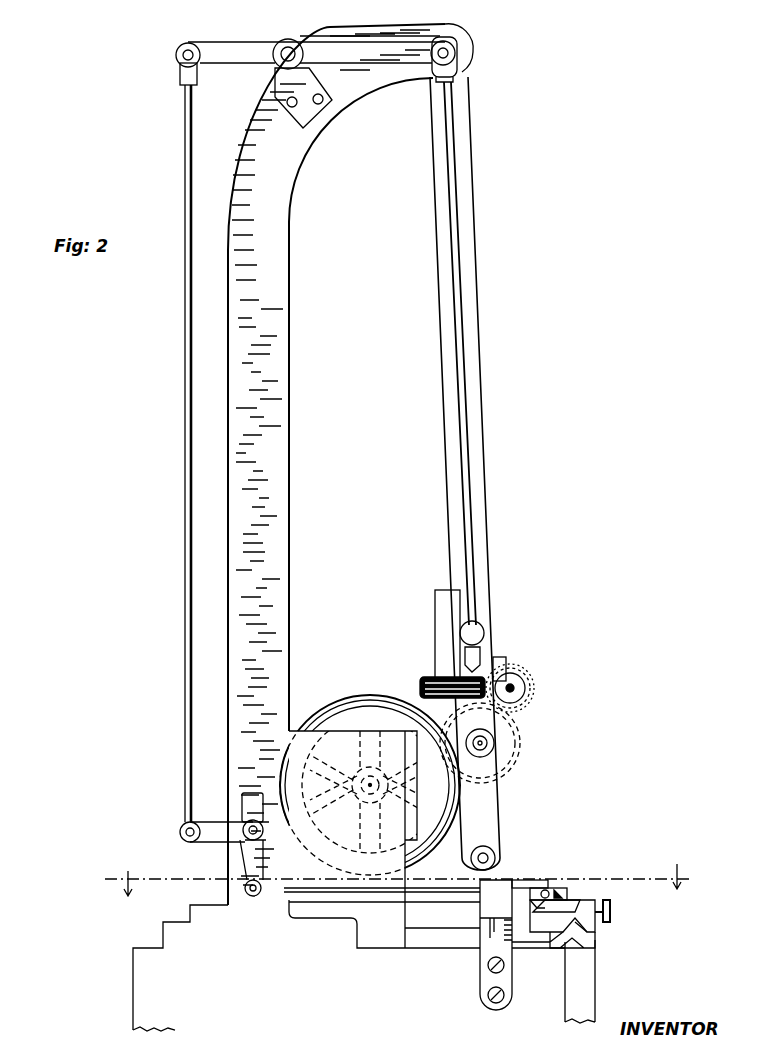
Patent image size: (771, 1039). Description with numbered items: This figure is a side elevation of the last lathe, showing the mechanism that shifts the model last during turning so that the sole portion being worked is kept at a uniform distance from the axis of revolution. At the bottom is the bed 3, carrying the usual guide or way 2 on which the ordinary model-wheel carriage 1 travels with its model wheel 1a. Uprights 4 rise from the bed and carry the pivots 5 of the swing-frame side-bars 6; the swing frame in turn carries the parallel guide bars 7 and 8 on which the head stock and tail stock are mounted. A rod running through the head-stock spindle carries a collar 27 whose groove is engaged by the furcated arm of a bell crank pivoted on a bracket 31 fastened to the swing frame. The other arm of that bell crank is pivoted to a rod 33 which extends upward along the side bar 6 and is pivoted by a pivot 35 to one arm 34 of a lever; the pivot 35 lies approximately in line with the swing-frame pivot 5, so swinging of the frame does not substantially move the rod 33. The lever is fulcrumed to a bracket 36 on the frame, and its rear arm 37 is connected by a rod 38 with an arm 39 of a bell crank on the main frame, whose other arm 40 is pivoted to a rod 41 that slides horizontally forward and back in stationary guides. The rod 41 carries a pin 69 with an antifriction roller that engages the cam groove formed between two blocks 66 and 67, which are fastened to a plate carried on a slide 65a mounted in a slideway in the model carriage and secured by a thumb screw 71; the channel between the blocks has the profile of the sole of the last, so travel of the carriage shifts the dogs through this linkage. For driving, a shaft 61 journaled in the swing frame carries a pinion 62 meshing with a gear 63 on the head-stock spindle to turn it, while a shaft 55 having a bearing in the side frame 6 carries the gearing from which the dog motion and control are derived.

The model-wheel carriage 1 is at (600, 925).
The model wheel 1a is at (353, 705).
The guide or way 2 is at (582, 952).
The bed 3 is at (583, 992).
The upright 4 is at (268, 490).
The pivot 5 is at (479, 22).
The swing-frame side-bar 6 is at (470, 345).
The guide bar 7 is at (482, 625).
The guide bar 8 is at (496, 855).
The collar 27 is at (486, 748).
The bracket 31 is at (445, 620).
The rod 33 is at (470, 525).
The lever arm 34 is at (345, 45).
The pivot 35 is at (456, 50).
The bracket 36 is at (296, 44).
The rear arm 37 is at (228, 42).
The rod 38 is at (188, 537).
The bell crank arm 39 is at (213, 836).
The bell crank arm 40 is at (250, 862).
The rod 41 is at (325, 893).
The shaft 55 is at (440, 680).
The shaft 61 is at (516, 684).
The pinion 62 is at (530, 694).
The gear 63 is at (520, 738).
The slide 65a is at (575, 902).
The cam block 66 is at (532, 895).
The cam block 67 is at (567, 895).
The pin 69 is at (548, 882).
The thumb screw 71 is at (547, 890).